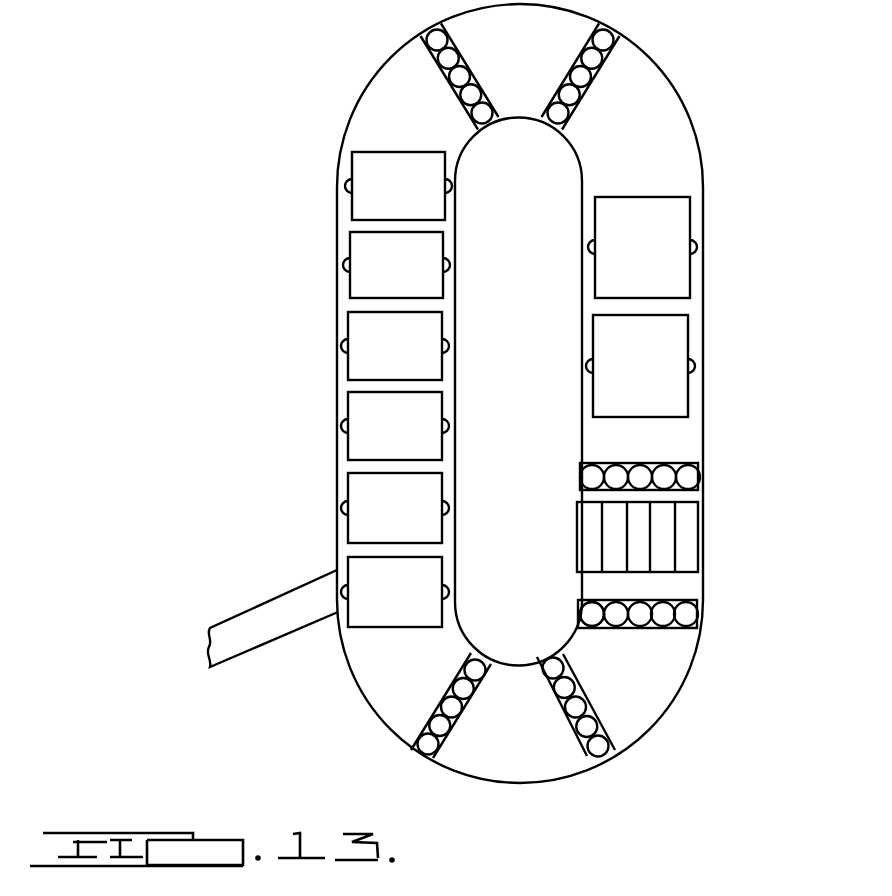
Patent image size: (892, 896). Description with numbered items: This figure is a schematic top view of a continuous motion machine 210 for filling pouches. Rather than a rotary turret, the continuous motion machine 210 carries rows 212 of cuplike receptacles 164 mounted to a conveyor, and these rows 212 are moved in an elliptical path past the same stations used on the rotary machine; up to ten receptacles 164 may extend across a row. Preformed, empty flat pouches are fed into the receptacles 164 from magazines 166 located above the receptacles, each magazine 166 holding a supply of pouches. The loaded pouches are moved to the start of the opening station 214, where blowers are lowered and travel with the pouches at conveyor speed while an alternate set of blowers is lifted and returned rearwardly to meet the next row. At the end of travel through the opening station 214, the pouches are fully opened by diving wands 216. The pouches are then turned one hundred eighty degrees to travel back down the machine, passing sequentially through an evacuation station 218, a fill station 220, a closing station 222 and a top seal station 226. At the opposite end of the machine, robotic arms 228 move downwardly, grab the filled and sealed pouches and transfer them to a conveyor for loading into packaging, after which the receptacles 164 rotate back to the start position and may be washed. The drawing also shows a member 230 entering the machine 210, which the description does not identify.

The continuous motion machine 210 is at (309, 710).
The rows of receptacles 212 is at (697, 602).
The opening station 214 is at (660, 377).
The diving wands 216 is at (662, 258).
The evacuation station 218 is at (418, 197).
The fill station 220 is at (416, 276).
The closing station 222 is at (415, 357).
The top seal station 226 is at (415, 437).
The robotic arms 228 is at (415, 603).
The arm 230 is at (268, 610).
The receptacles 164 is at (597, 615).
The magazines 166 is at (667, 538).